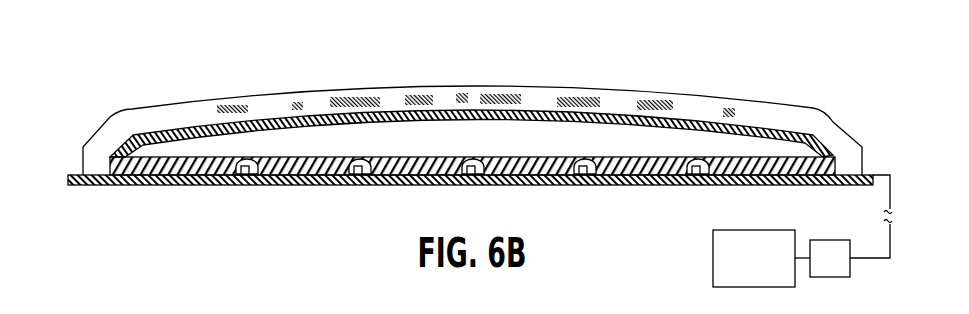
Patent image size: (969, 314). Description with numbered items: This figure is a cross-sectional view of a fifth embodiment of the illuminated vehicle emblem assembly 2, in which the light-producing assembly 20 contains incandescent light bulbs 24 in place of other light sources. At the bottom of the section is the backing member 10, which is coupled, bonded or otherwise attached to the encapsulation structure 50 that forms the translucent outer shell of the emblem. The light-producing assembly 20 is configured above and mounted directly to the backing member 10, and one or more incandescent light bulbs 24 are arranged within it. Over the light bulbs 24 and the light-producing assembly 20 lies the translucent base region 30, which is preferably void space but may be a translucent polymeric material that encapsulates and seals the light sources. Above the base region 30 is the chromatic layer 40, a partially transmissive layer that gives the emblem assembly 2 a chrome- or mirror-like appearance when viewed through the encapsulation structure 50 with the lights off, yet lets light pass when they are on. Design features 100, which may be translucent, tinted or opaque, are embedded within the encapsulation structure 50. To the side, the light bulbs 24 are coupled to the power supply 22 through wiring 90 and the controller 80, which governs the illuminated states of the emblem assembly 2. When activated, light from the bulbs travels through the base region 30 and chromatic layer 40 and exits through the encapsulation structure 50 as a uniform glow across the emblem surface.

The illuminated vehicle emblem assembly 2 is at (181, 52).
The backing member 10 is at (76, 175).
The light-producing assembly 20 is at (170, 157).
The power supply 22 is at (713, 252).
The incandescent light bulbs 24 is at (360, 185).
The translucent base region 30 is at (742, 147).
The chromatic layer 40 is at (194, 134).
The encapsulation structure 50 is at (620, 100).
The controller 80 is at (821, 269).
The wiring 90 is at (873, 258).
The design features 100 is at (233, 103).